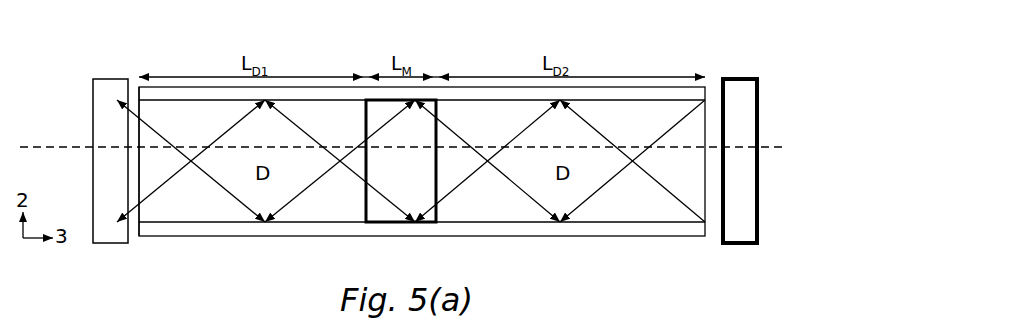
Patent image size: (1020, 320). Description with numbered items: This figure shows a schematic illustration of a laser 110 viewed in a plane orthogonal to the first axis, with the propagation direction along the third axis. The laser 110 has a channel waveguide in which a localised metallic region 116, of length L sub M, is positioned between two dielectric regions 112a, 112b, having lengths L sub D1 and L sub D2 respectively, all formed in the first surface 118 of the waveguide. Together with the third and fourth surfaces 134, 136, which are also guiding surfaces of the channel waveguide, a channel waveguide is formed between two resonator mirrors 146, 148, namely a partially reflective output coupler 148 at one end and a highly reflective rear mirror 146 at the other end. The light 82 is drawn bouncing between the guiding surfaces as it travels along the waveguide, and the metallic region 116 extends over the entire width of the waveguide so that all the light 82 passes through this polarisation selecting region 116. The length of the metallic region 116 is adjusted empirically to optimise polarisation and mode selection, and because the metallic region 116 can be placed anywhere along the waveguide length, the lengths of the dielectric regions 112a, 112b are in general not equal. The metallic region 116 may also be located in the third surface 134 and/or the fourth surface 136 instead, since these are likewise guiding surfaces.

The laser 110 is at (672, 56).
The first dielectric region 112a is at (303, 210).
The second dielectric region 112b is at (518, 210).
The metallic region 116 is at (413, 100).
The first surface 118 is at (178, 161).
The third surface 134 is at (322, 104).
The fourth surface 136 is at (230, 212).
The rear mirror 146 is at (740, 243).
The output coupler 148 is at (107, 243).
The light 82 is at (150, 197).